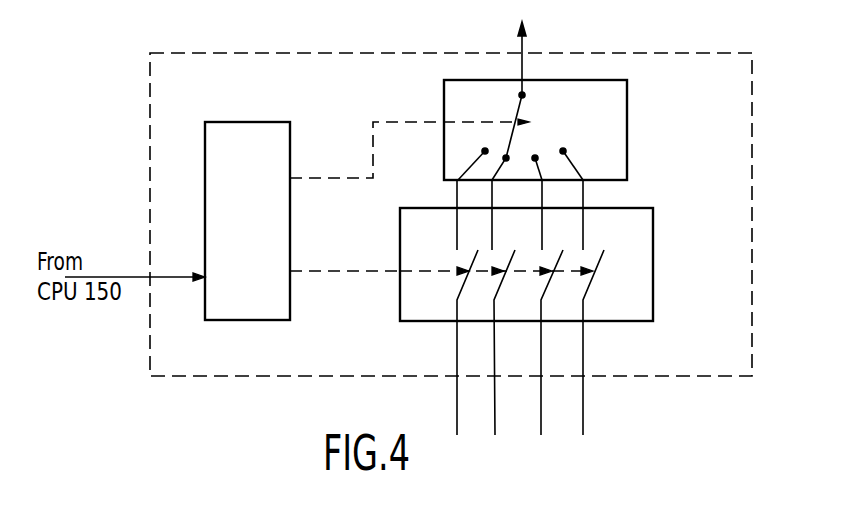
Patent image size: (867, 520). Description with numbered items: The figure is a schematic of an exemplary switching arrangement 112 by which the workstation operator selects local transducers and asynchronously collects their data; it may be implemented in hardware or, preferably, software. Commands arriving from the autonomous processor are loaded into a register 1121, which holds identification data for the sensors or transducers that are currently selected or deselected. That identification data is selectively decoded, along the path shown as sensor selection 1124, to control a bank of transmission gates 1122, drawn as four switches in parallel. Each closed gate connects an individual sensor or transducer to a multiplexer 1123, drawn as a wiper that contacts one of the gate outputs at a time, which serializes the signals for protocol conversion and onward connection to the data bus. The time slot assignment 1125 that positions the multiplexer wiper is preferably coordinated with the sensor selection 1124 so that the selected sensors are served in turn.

The switching arrangement 112 is at (752, 108).
The register 1121 is at (248, 122).
The transmission gates 1122 is at (653, 268).
The multiplexer 1123 is at (627, 115).
The sensor selection 1124 is at (318, 271).
The time slot assignment 1125 is at (373, 122).